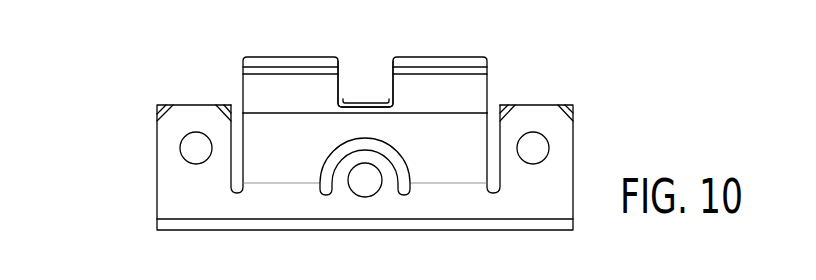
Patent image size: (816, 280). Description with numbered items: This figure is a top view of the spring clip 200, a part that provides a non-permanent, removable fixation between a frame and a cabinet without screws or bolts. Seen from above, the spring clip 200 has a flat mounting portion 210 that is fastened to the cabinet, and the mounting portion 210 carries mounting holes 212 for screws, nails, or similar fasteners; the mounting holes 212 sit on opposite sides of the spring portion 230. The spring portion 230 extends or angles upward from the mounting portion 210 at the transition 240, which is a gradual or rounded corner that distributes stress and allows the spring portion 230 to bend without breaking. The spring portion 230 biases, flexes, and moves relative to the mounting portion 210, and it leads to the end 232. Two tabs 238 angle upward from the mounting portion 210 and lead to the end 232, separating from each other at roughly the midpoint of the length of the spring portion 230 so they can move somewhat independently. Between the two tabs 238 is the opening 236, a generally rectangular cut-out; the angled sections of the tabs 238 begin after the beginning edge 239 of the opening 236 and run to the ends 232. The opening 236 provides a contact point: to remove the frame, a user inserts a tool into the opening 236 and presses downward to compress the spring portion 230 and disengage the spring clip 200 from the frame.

The spring clip 200 is at (130, 84).
The mounting portion 210 is at (550, 210).
The mounting holes 212 is at (195, 149).
The spring portion 230 is at (467, 135).
The end 232 is at (473, 65).
The opening 236 is at (373, 102).
The tabs 238 is at (256, 155).
The beginning edge 239 is at (352, 102).
The transition 240 is at (448, 183).